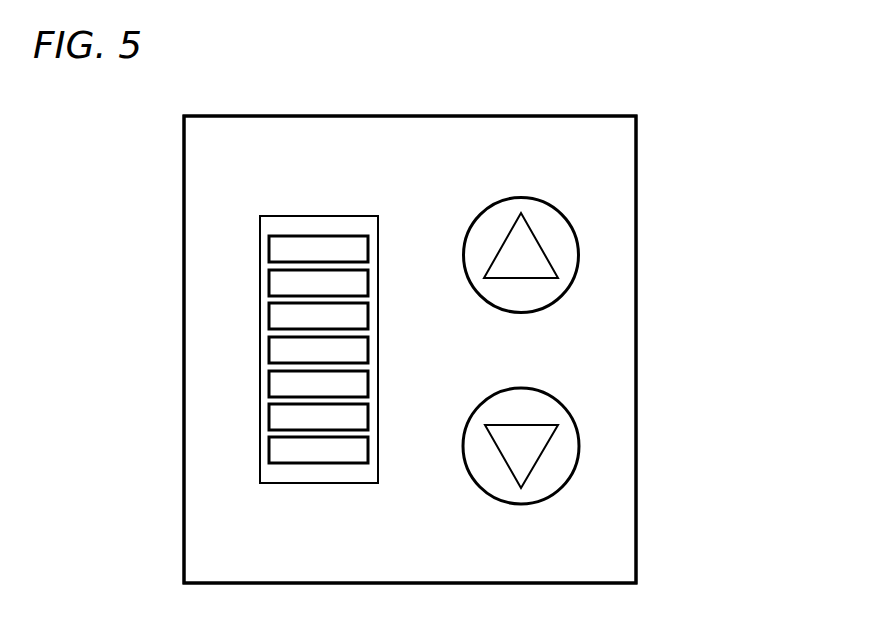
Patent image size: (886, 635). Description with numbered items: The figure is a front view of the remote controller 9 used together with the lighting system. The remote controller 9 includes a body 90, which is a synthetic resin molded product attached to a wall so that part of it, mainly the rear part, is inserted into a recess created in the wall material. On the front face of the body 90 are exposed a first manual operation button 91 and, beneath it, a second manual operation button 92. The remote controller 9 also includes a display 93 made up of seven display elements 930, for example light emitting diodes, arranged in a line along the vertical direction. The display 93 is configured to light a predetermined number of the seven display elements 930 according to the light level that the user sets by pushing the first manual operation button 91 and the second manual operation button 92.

The remote controller 9 is at (463, 107).
The body 90 is at (637, 138).
The first manual operation button 91 is at (553, 229).
The second manual operation button 92 is at (547, 477).
The display 93 is at (259, 360).
The display elements 930 is at (269, 248).